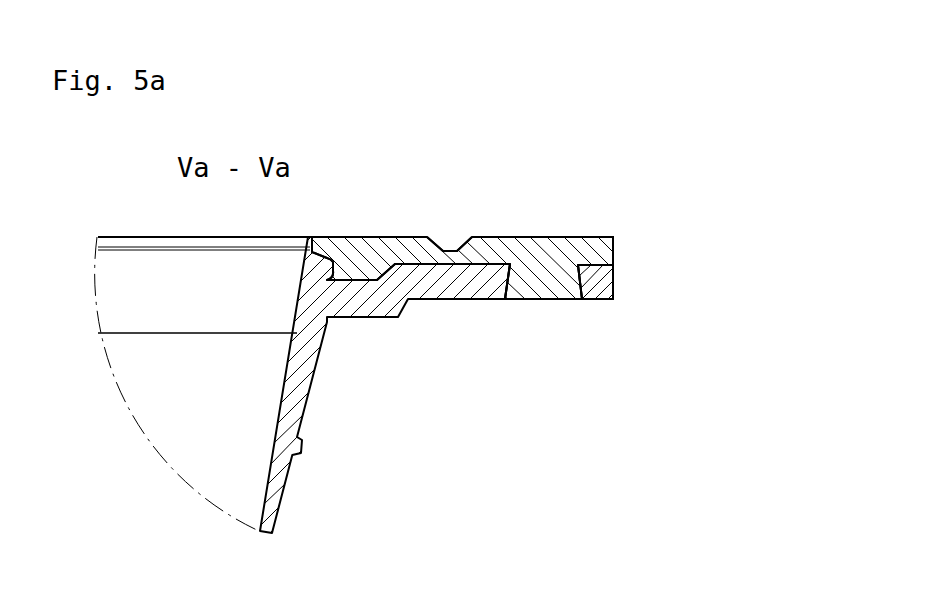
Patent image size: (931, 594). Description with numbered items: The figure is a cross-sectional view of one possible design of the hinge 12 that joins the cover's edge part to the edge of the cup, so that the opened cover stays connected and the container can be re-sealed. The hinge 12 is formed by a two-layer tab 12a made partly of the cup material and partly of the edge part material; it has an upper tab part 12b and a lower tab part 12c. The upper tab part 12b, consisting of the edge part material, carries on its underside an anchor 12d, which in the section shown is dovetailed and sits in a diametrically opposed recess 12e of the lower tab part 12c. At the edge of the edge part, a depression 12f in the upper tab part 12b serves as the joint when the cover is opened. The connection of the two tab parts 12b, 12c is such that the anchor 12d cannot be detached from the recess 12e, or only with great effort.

The hinge 12 is at (441, 312).
The two-layer tab 12a is at (622, 248).
The upper tab part 12b is at (462, 306).
The lower tab part 12c is at (437, 285).
The anchor 12d is at (541, 288).
The recess 12e is at (614, 290).
The depression 12f is at (445, 249).